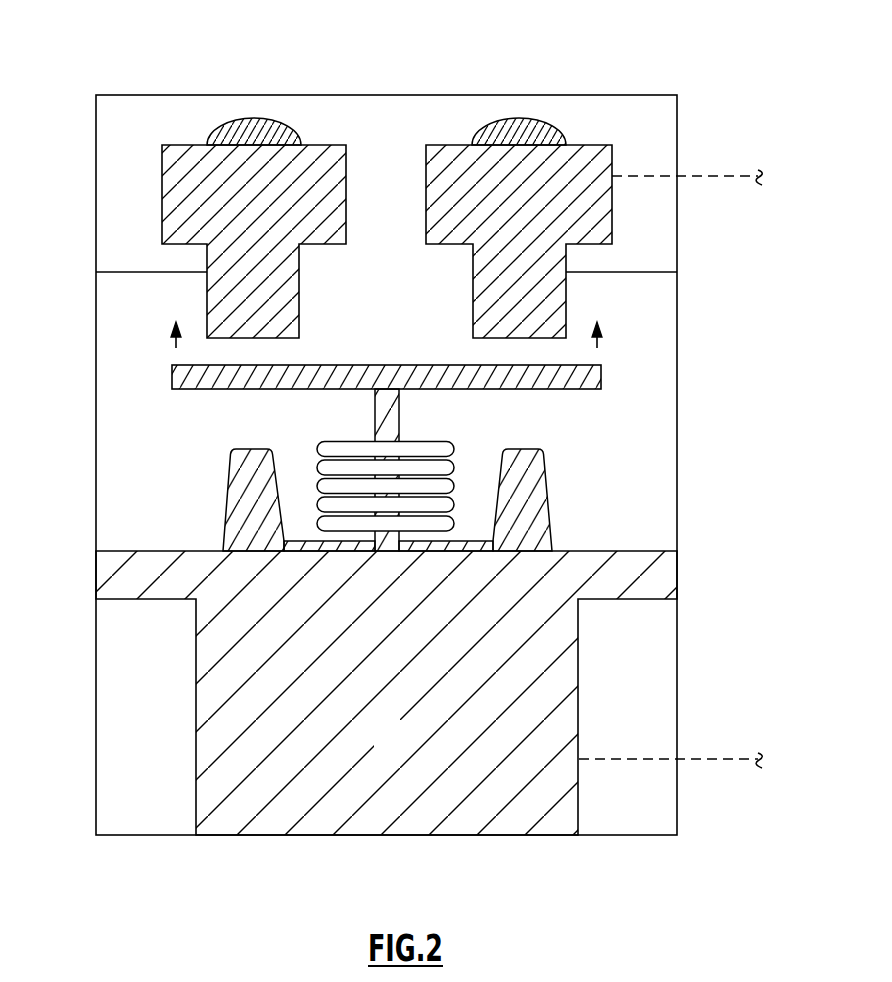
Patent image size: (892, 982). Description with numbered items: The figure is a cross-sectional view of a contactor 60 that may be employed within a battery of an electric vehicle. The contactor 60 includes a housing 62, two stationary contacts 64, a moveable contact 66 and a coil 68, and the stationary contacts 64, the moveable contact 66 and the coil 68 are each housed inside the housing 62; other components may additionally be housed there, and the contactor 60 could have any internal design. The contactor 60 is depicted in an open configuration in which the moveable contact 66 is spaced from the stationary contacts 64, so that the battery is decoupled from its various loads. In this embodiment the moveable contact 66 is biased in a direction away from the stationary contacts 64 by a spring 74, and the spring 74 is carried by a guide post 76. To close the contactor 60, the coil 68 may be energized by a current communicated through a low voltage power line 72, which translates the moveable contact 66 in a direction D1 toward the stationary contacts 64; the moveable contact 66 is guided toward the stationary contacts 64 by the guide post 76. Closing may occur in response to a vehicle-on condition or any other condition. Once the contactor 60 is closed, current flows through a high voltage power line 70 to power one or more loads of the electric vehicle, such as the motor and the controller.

The contactor 60 is at (491, 75).
The housing 62 is at (677, 456).
The stationary contact 64 is at (237, 317).
The moveable contact 66 is at (601, 383).
The coil 68 is at (409, 748).
The high voltage power line 70 is at (725, 176).
The low voltage power line 72 is at (647, 760).
The spring 74 is at (454, 504).
The guide post 76 is at (383, 478).
The direction D1 is at (176, 348).